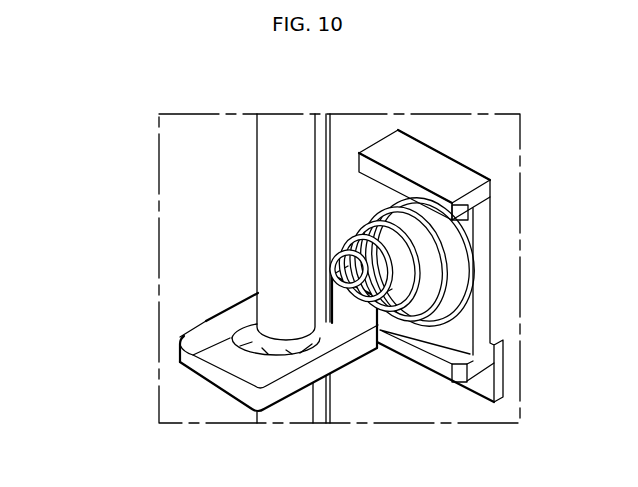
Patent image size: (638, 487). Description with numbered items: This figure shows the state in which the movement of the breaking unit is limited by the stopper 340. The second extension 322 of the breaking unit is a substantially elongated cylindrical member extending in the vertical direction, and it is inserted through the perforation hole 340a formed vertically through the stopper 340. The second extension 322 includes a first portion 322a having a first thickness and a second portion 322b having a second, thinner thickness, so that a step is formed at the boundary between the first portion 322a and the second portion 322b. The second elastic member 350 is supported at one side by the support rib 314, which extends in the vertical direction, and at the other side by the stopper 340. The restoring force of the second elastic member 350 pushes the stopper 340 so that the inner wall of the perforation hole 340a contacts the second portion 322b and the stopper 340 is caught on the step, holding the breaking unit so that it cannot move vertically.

The support rib 314 is at (427, 160).
The second extension 322 is at (76, 230).
The first portion 322a is at (270, 242).
The second portion 322b is at (243, 348).
The stopper 340 is at (348, 355).
The perforation hole 340a is at (187, 363).
The second elastic member 350 is at (445, 283).